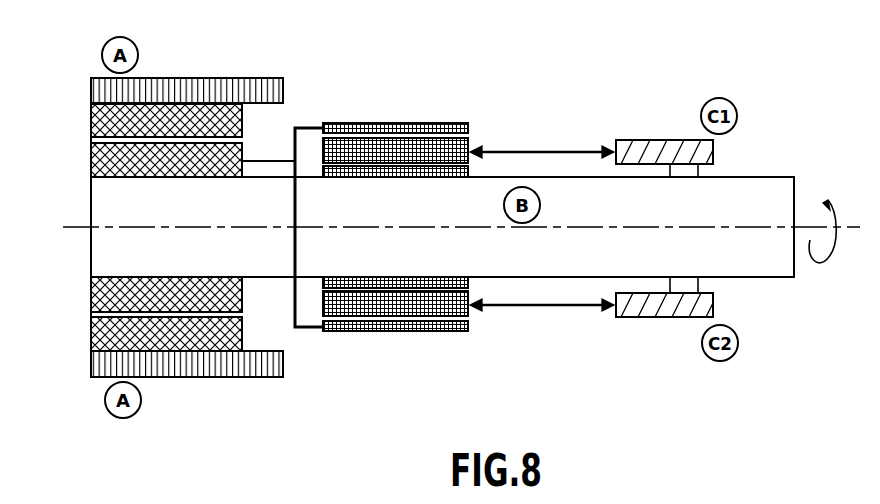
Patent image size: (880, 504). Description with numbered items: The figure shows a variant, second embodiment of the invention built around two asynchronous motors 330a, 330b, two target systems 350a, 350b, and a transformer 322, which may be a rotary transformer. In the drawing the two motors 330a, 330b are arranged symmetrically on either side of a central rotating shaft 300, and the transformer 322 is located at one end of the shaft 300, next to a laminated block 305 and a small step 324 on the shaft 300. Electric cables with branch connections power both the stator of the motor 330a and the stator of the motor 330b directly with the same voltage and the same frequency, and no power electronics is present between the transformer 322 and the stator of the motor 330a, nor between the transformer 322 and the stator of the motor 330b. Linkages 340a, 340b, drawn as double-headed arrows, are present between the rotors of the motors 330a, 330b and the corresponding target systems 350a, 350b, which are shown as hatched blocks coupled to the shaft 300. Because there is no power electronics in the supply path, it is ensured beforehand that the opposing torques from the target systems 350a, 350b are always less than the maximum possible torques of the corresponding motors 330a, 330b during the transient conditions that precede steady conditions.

The rotor shaft 300 is at (772, 190).
The laminated stator core 305 is at (172, 88).
The transformer 322 is at (86, 141).
The shaft step / shoulder 324 is at (265, 160).
The asynchronous motor 330a is at (388, 118).
The asynchronous motor 330b is at (388, 337).
The linkage 340a is at (545, 147).
The linkage 340b is at (548, 310).
The target system 350a is at (667, 139).
The target system 350b is at (668, 318).